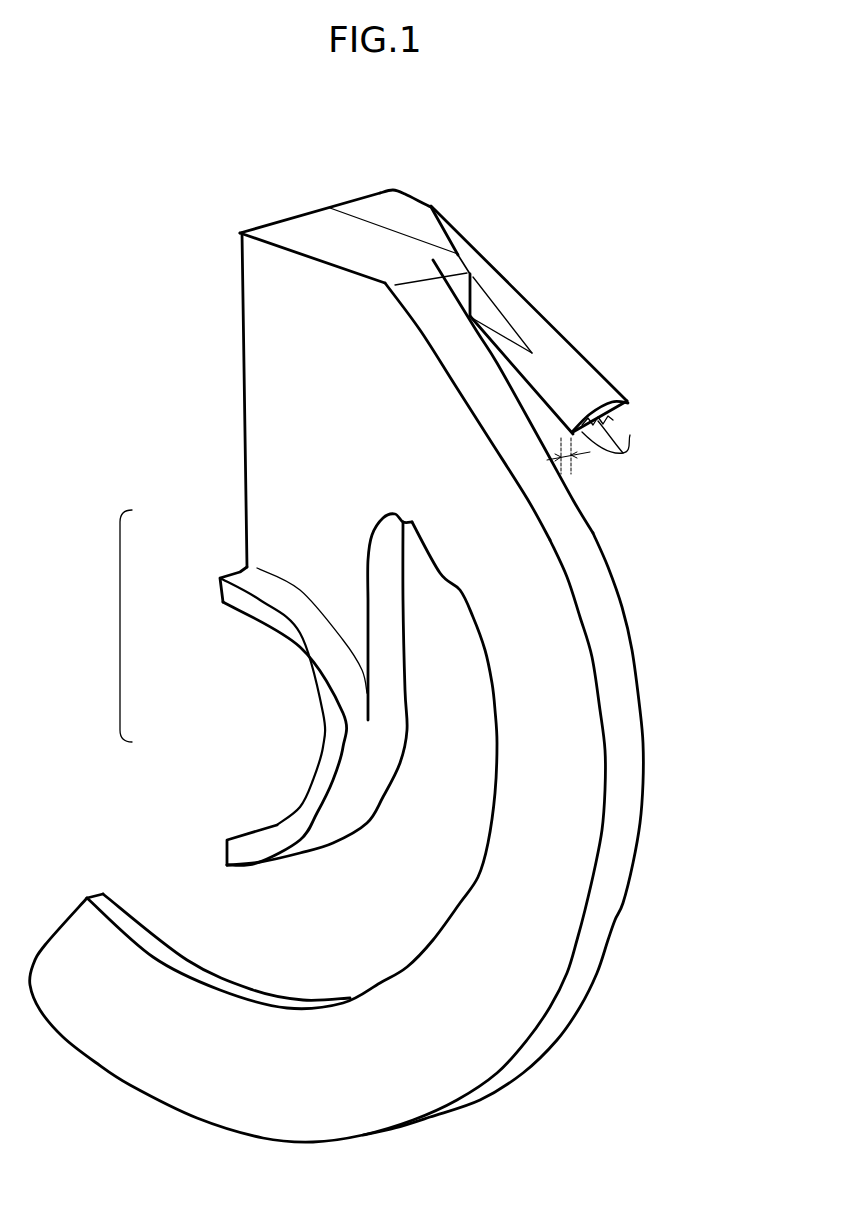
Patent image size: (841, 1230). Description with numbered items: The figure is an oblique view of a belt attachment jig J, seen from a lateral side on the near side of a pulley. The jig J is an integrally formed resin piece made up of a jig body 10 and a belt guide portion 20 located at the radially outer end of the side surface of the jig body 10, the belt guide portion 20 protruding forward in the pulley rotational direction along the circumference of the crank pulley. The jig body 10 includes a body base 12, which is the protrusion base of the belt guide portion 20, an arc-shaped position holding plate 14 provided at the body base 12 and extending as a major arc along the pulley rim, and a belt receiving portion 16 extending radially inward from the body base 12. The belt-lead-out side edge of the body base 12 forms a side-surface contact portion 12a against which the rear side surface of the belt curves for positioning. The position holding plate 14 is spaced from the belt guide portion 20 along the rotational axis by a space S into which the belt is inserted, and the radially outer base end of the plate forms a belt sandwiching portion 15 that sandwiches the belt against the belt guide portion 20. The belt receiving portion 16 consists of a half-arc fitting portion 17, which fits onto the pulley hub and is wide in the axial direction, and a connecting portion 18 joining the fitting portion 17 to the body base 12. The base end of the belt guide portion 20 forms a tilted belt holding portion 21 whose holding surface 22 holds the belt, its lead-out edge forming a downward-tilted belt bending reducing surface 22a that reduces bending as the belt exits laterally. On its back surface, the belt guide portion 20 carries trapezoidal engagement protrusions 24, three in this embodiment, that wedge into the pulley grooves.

The belt attachment jig J is at (216, 192).
The jig body 10 is at (239, 273).
The body base 12 is at (258, 352).
The side-surface contact portion 12a is at (465, 279).
The position holding plate 14 is at (627, 752).
The belt sandwiching portion 15 is at (443, 323).
The belt receiving portion 16 is at (118, 625).
The fitting portion 17 is at (330, 710).
The connecting portion 18 is at (267, 531).
The belt guide portion 20 is at (602, 364).
The belt holding portion 21 is at (403, 207).
The holding surface 22 is at (477, 252).
The belt bending reducing surface 22a is at (483, 308).
The engagement protrusions 24 is at (620, 435).
The space S is at (567, 468).